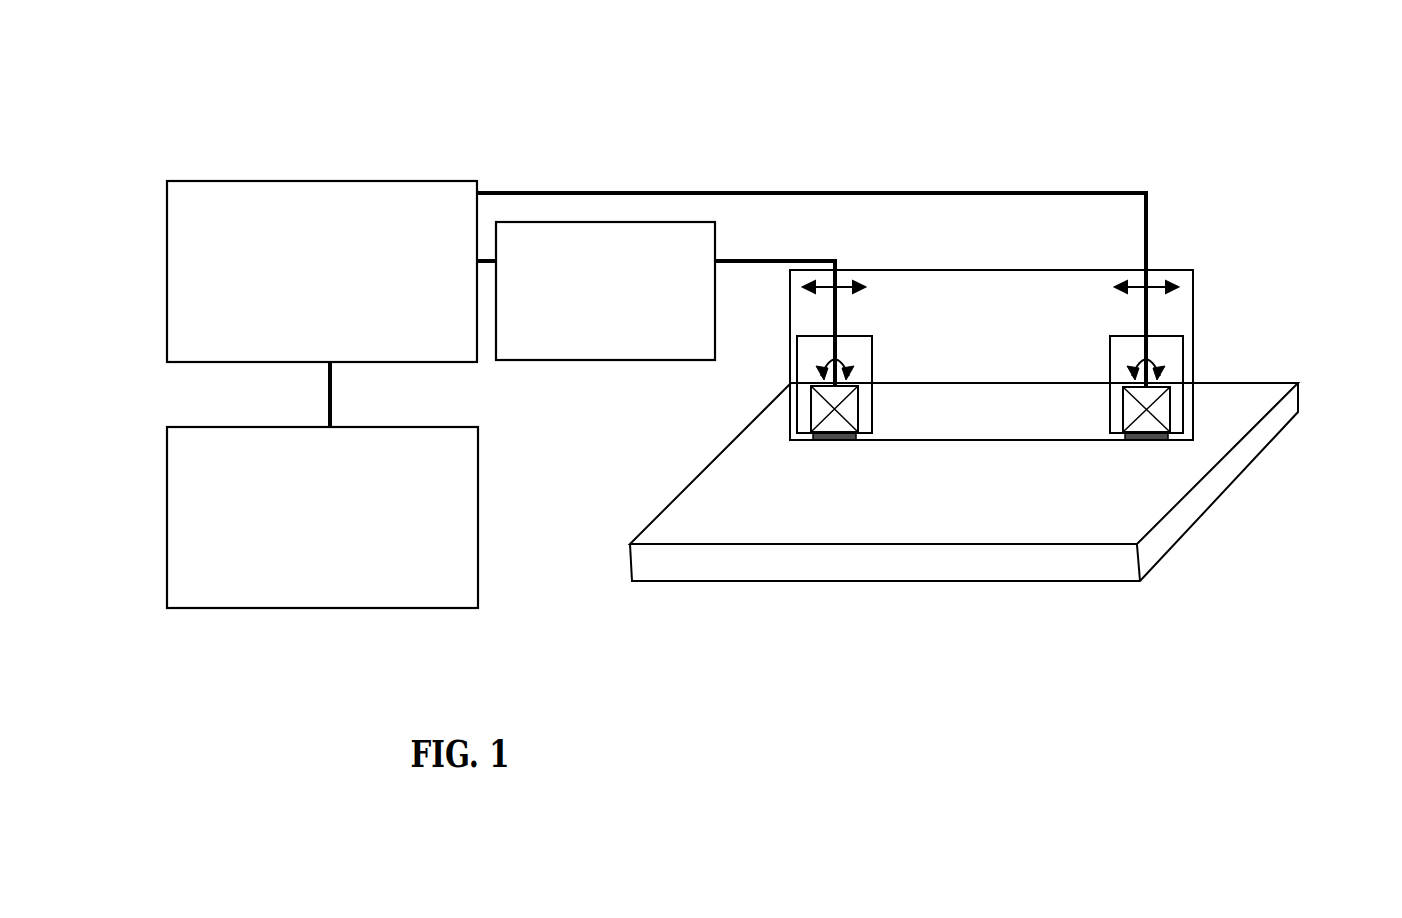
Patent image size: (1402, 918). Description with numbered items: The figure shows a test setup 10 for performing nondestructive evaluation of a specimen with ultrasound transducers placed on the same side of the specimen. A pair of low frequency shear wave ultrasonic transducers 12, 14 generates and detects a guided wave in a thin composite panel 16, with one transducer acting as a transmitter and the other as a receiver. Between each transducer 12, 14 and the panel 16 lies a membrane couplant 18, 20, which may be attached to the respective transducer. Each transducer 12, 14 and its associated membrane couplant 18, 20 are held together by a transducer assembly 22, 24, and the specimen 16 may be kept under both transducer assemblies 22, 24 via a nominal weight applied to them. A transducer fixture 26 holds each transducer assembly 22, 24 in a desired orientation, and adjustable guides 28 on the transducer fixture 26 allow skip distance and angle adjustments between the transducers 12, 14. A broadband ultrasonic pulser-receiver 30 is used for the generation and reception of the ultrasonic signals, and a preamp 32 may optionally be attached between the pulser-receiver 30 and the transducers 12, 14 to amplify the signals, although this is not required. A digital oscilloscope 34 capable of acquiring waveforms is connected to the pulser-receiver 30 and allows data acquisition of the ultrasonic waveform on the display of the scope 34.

The test setup 10 is at (722, 52).
The low frequency shear wave ultrasonic transducer 12 is at (810, 402).
The low frequency shear wave ultrasonic transducer 14 is at (1163, 413).
The thin composite panel 16 is at (847, 567).
The membrane couplant 18 is at (820, 438).
The membrane couplant 20 is at (1157, 437).
The transducer assembly 22 is at (797, 343).
The transducer assembly 24 is at (1177, 362).
The transducer fixture 26 is at (1073, 267).
The adjustable guides 28 is at (1195, 312).
The ultrasonic pulser-receiver 30 is at (322, 271).
The preamp 32 is at (605, 291).
The digital oscilloscope 34 is at (322, 517).